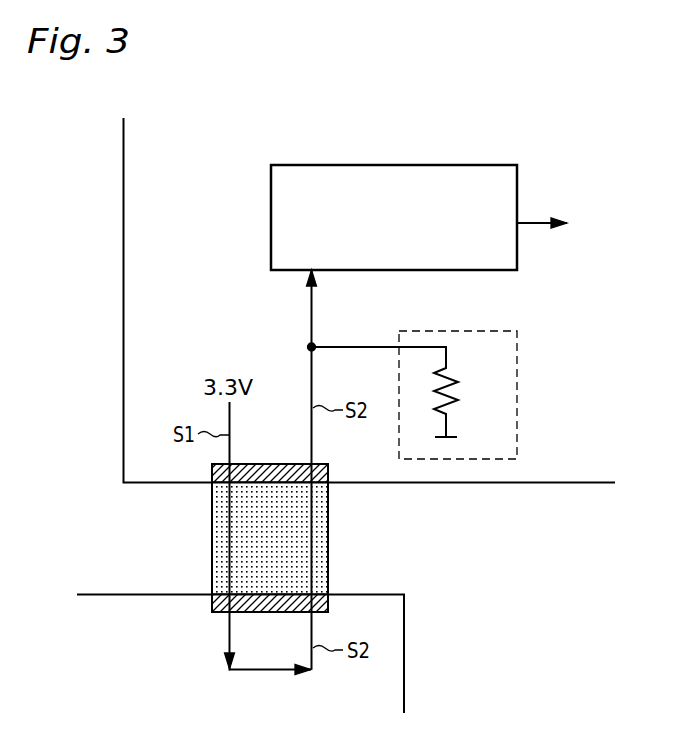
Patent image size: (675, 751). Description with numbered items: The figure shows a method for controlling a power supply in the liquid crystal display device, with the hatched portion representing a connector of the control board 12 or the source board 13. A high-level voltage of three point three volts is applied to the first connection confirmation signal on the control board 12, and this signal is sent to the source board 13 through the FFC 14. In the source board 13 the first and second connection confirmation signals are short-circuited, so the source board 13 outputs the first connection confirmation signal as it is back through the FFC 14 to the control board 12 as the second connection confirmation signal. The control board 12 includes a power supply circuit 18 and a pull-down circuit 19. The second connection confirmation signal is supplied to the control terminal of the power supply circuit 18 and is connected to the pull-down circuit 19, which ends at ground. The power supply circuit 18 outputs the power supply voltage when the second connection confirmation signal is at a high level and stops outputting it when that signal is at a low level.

The control board 12 is at (123, 344).
The source board 13 is at (406, 650).
The FFC 14 is at (329, 540).
The power supply circuit 18 is at (271, 220).
The pull-down circuit 19 is at (517, 393).